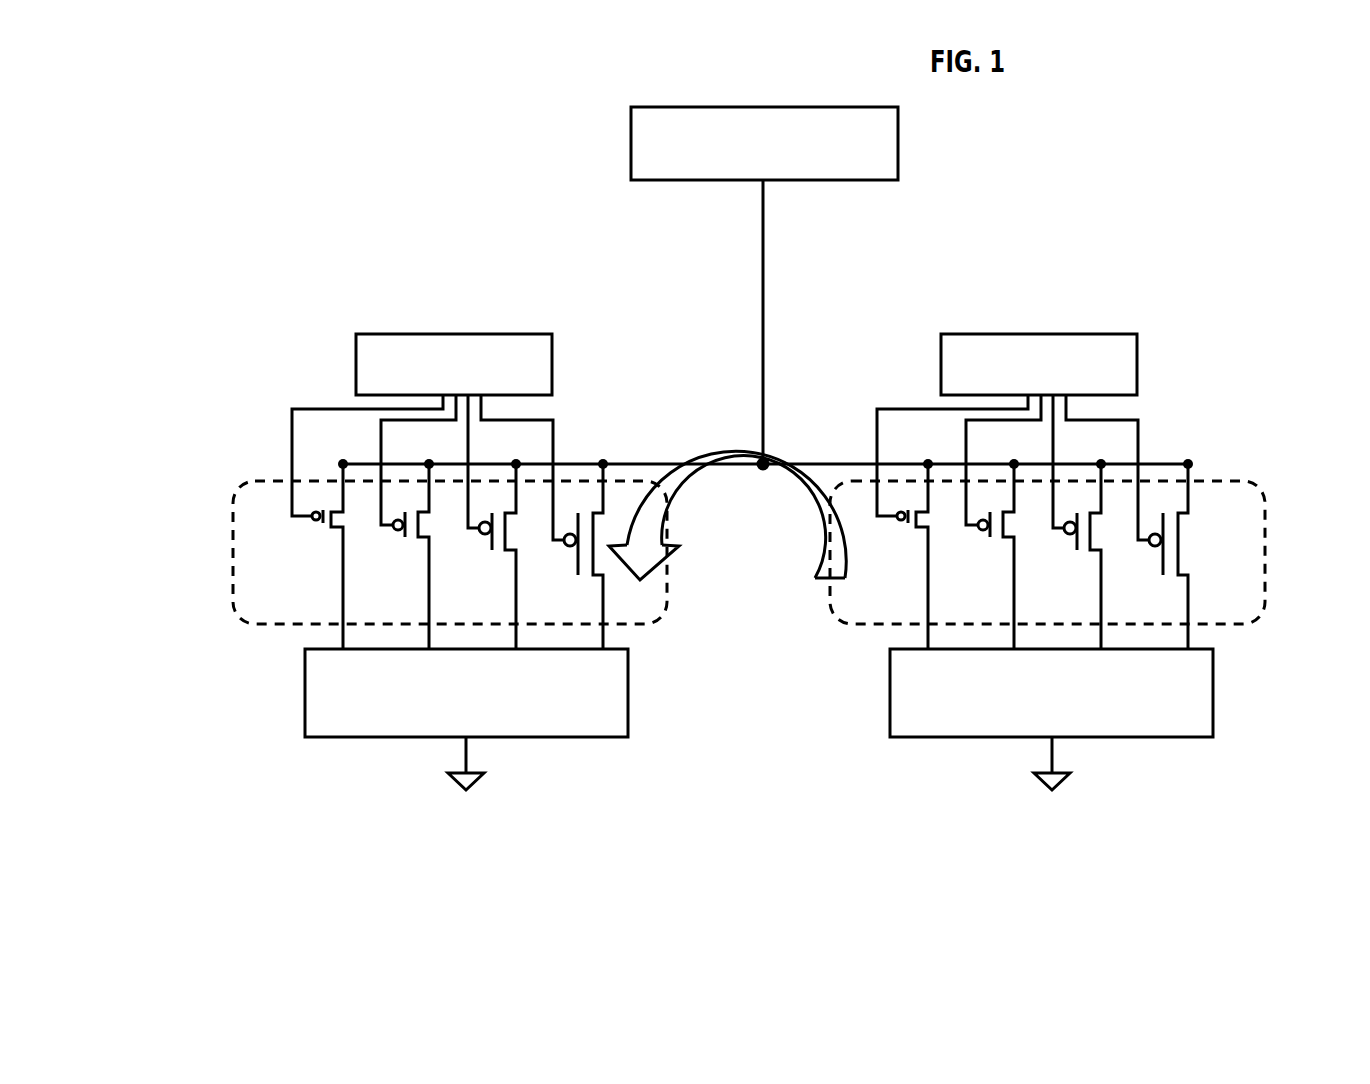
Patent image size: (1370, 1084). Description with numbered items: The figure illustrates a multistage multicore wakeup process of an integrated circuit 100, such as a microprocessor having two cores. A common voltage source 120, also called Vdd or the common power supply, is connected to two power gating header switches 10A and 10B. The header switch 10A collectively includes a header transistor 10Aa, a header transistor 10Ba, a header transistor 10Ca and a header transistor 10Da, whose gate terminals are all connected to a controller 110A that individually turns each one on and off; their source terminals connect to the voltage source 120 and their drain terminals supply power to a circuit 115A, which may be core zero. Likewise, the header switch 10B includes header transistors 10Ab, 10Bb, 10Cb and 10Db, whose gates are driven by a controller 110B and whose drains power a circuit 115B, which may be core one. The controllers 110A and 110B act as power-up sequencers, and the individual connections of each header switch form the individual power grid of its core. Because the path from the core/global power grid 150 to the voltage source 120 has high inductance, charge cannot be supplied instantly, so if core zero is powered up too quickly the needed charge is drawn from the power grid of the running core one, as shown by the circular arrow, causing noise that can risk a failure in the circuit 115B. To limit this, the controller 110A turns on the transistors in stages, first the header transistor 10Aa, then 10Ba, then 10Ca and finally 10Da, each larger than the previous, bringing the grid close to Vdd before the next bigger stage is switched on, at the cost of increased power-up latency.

The integrated circuit 100 is at (1037, 110).
The common voltage source 120 is at (764, 288).
The controller 110A is at (428, 437).
The controller 110B is at (1013, 437).
The circuit 115A is at (466, 722).
The circuit 115B is at (1051, 722).
The core/global power grid 150 is at (842, 457).
The header switch 10A is at (233, 570).
The header switch 10B is at (1265, 548).
The header transistor 10Aa is at (304, 556).
The header transistor 10Ba is at (394, 556).
The header transistor 10Ca is at (481, 556).
The header transistor 10Da is at (569, 556).
The header transistor 10Ab is at (891, 556).
The header transistor 10Bb is at (980, 556).
The header transistor 10Cb is at (1067, 556).
The header transistor 10Db is at (1154, 556).